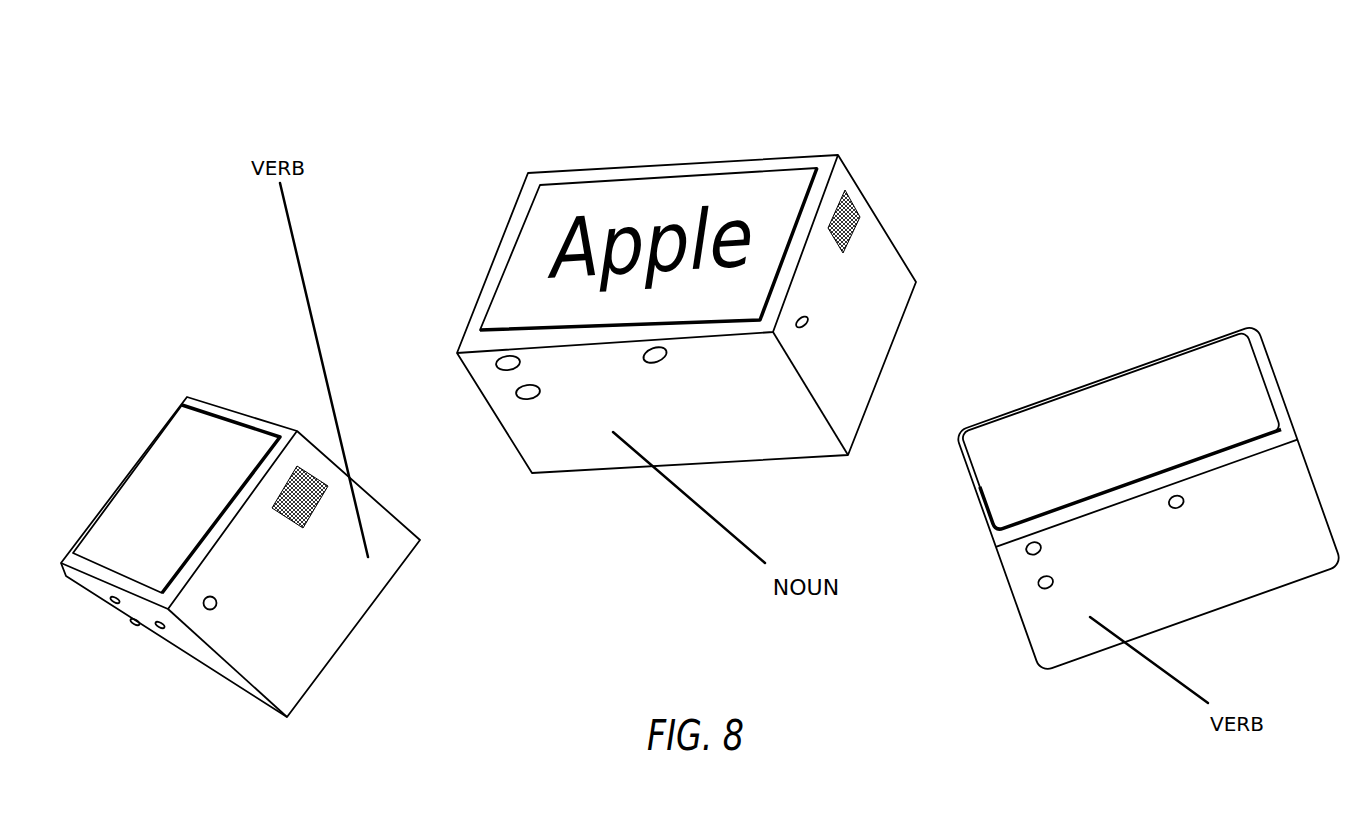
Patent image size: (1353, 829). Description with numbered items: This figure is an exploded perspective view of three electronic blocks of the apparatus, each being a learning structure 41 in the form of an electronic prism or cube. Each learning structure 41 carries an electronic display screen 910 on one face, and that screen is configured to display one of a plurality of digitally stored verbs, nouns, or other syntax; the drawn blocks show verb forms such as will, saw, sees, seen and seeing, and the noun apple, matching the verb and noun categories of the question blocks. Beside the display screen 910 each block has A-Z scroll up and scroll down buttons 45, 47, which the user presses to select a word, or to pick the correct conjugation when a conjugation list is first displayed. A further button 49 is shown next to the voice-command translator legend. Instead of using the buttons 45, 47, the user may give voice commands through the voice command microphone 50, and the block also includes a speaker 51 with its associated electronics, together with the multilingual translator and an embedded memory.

The learning structure 41 is at (228, 407).
The scroll up button 45 is at (1024, 555).
The scroll down button 47 is at (1040, 595).
The selection button 49 is at (1186, 498).
The voice command microphone 50 is at (212, 610).
The speaker 51 is at (566, 432).
The electronic display screen 910 is at (1205, 371).